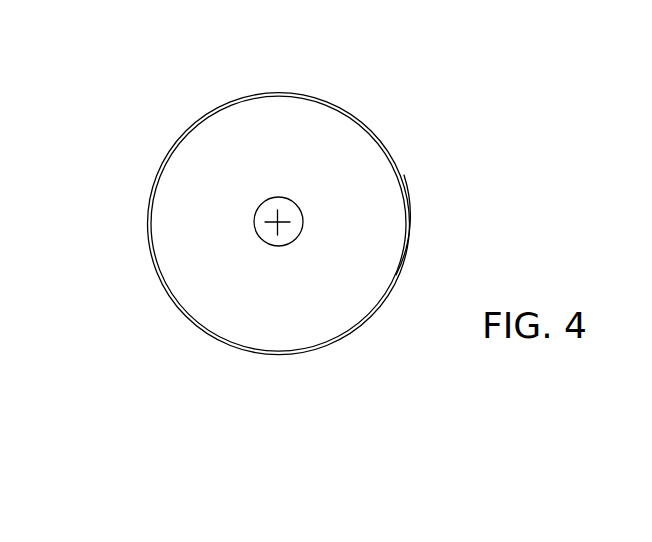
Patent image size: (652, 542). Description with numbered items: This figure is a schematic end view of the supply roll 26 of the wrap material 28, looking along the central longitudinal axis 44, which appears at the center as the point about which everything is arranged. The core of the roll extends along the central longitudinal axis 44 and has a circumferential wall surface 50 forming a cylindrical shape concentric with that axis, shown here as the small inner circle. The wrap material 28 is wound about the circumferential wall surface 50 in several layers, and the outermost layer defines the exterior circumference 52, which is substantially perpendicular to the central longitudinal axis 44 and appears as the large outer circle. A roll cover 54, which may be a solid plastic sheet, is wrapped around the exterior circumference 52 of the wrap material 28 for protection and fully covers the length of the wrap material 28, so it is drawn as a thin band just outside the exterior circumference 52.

The supply roll 26 is at (166, 102).
The wrap material 28 is at (333, 250).
The central longitudinal axis 44 is at (274, 222).
The circumferential wall surface 50 is at (272, 197).
The exterior circumference 52 is at (333, 105).
The roll cover 54 is at (405, 182).